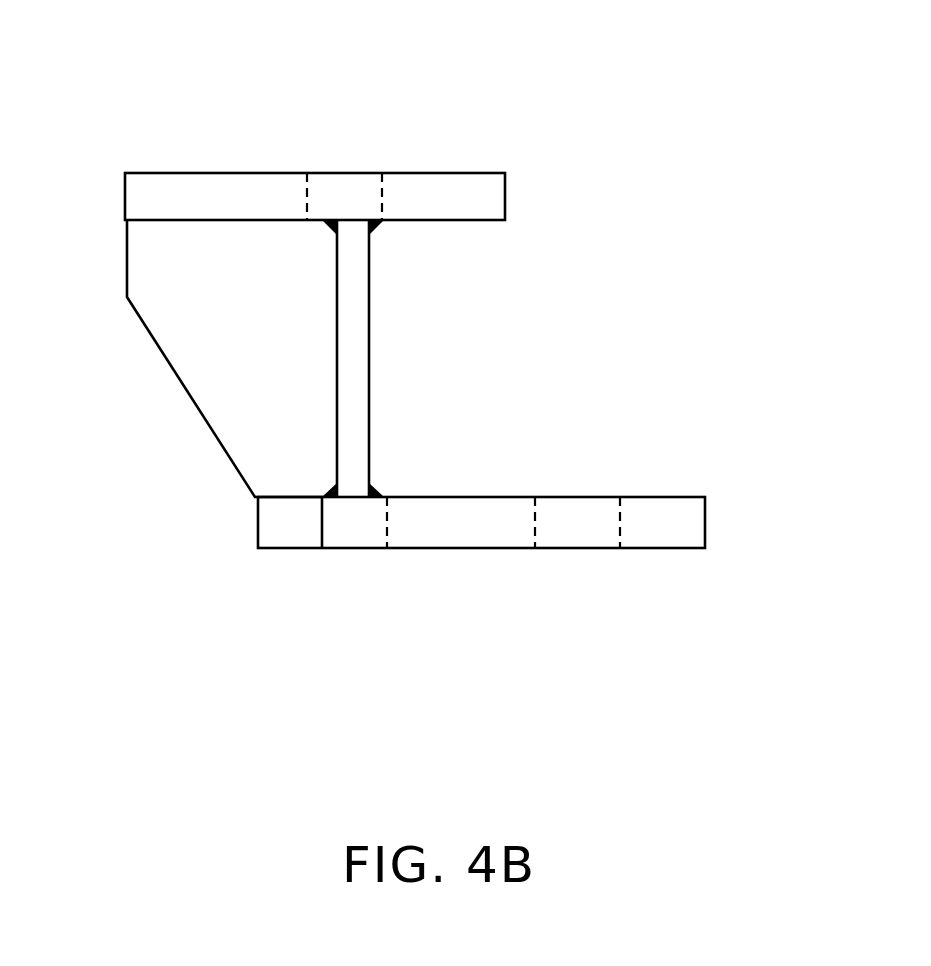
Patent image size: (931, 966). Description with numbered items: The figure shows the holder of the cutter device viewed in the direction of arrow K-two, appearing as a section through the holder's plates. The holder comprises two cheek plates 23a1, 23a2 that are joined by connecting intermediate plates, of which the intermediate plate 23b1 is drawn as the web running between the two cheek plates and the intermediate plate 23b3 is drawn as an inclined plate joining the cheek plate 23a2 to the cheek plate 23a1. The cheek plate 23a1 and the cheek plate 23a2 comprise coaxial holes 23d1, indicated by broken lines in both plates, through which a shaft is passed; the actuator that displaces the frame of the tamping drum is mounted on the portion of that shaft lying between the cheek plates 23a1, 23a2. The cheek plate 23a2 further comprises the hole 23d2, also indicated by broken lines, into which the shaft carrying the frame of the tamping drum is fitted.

The cheek plate 23a1 is at (287, 535).
The cheek plate 23a2 is at (182, 178).
The connecting intermediate plate 23b1 is at (220, 357).
The connecting intermediate plate 23b3 is at (349, 400).
The coaxial hole 23d1 is at (352, 184).
The hole 23d2 is at (592, 535).